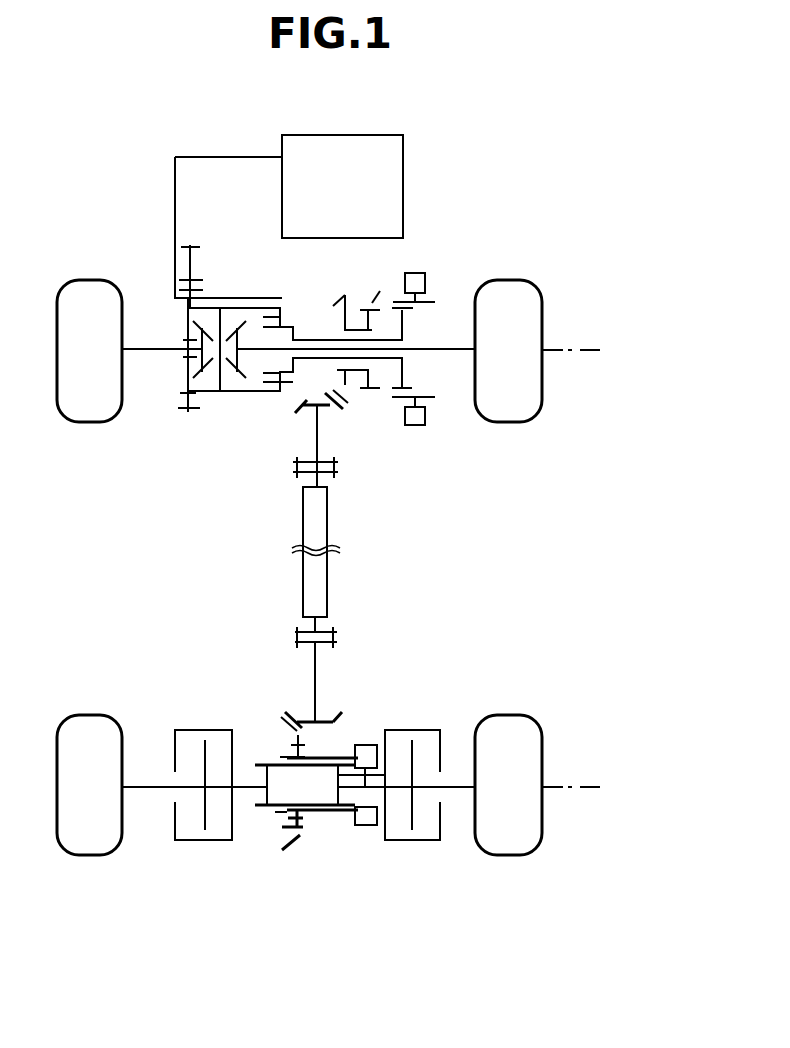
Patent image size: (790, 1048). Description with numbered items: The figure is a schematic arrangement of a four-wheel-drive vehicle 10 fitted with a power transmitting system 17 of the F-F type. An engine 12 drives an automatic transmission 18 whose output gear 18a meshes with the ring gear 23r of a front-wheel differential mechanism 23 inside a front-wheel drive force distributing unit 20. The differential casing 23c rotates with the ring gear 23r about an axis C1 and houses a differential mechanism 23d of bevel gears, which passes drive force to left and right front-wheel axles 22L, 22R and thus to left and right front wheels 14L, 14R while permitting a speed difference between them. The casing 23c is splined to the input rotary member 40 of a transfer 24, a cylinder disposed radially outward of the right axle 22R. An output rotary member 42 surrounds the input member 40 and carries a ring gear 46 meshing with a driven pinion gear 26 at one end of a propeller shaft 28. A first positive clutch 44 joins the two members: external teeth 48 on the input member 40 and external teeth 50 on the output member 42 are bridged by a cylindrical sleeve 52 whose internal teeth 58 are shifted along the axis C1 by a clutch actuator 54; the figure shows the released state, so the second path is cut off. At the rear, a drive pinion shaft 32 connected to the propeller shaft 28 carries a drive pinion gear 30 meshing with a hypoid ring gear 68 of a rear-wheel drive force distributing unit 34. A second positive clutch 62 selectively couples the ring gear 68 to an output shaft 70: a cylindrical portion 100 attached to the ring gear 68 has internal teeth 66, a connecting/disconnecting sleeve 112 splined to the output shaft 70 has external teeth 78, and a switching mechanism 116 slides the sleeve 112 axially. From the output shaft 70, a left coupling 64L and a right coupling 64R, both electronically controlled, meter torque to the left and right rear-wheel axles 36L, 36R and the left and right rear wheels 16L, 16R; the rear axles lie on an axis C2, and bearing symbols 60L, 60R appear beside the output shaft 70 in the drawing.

The 4-wheel-drive vehicle 10 is at (497, 100).
The engine 12 is at (338, 152).
The left front wheel 14L is at (93, 298).
The right front wheel 14R is at (507, 298).
The left rear wheel 16L is at (87, 845).
The right rear wheel 16R is at (513, 845).
The power transmitting system 17 is at (527, 545).
The automatic transmission 18 is at (227, 170).
The output gear 18a is at (185, 277).
The front-wheel drive force distributing unit 20 is at (287, 417).
The left front-wheel axle 22L is at (162, 378).
The right front-wheel axle 22R is at (453, 352).
The front-wheel differential mechanism 23 is at (305, 411).
The differential casing 23c is at (233, 394).
The differential mechanism 23d is at (205, 398).
The ring gear 23r is at (186, 415).
The transfer 24 is at (383, 374).
The driven pinion gear 26 is at (312, 438).
The propeller shaft 28 is at (323, 570).
The drive pinion gear 30 is at (330, 721).
The drive pinion shaft 32 is at (320, 660).
The rear-wheel drive force distributing unit 34 is at (289, 769).
The left rear-wheel axle 36L is at (142, 780).
The right rear-wheel axle 36R is at (452, 780).
The input rotary member 40 is at (317, 338).
The output rotary member 42 is at (352, 325).
The first positive clutch 44 is at (405, 418).
The ring gear 46 is at (326, 400).
The external teeth 48 is at (417, 309).
The external teeth 50 is at (377, 310).
The cylindrical sleeve 52 is at (432, 300).
The clutch actuator 54 is at (416, 272).
The internal teeth 58 is at (419, 306).
The left bearing 60L is at (244, 782).
The right bearing 60R is at (366, 746).
The second positive clutch 62 is at (309, 774).
The left coupling 64L is at (190, 848).
The right coupling 64R is at (415, 848).
The internal teeth 66 is at (310, 814).
The ring gear 68 is at (292, 842).
The output shaft 70 is at (310, 762).
The external teeth 78 is at (280, 814).
The cylindrical portion 100 is at (287, 752).
The connecting/disconnecting sleeve 112 is at (328, 814).
The switching mechanism 116 is at (346, 826).
The axis C1 is at (549, 352).
The rear axle axis C2 is at (549, 789).